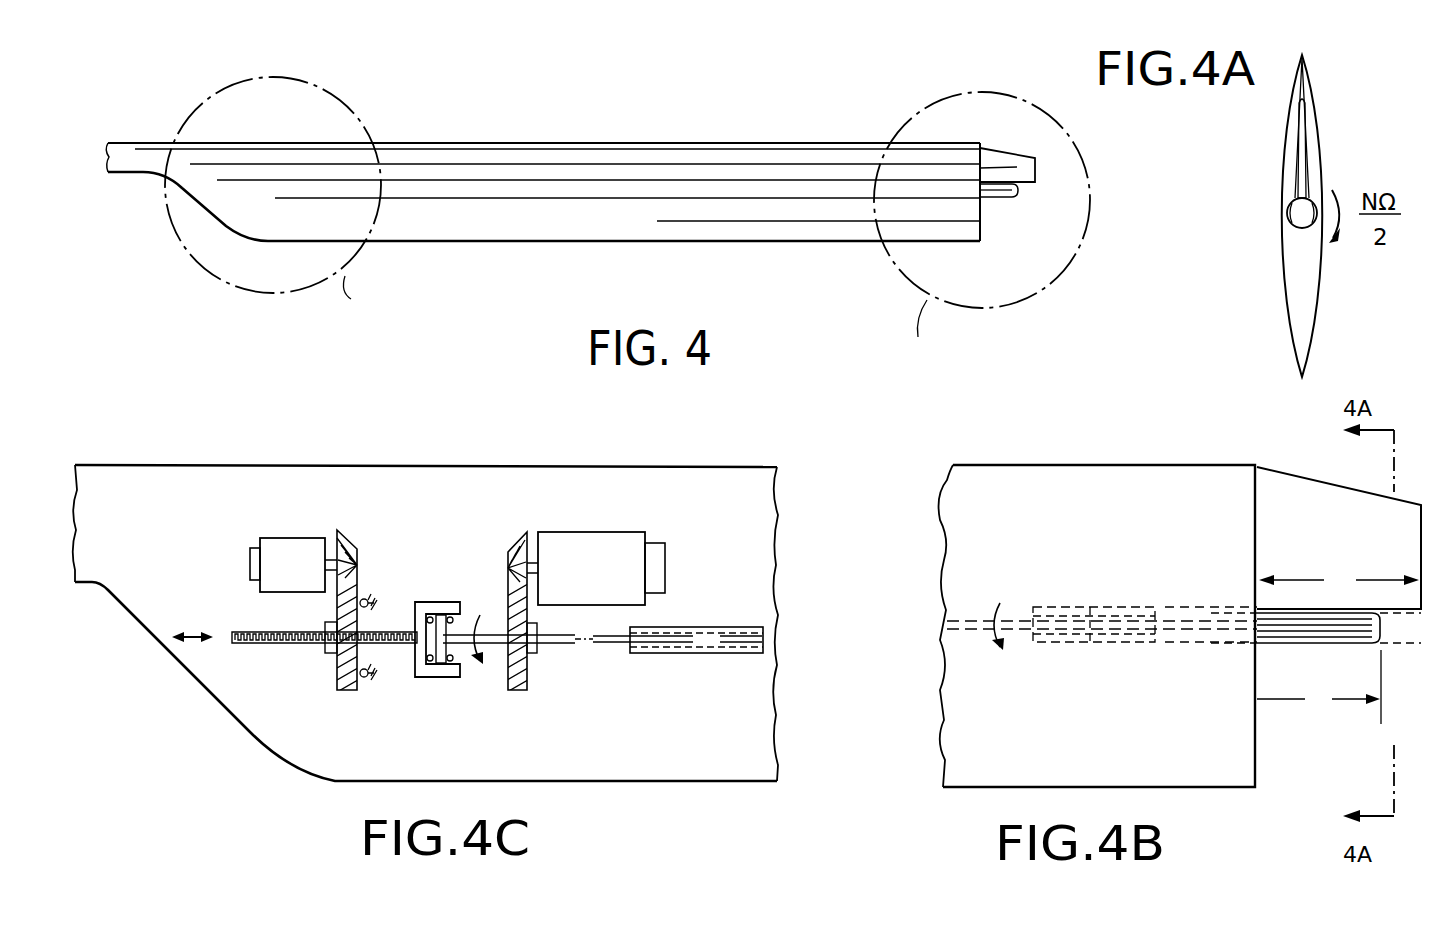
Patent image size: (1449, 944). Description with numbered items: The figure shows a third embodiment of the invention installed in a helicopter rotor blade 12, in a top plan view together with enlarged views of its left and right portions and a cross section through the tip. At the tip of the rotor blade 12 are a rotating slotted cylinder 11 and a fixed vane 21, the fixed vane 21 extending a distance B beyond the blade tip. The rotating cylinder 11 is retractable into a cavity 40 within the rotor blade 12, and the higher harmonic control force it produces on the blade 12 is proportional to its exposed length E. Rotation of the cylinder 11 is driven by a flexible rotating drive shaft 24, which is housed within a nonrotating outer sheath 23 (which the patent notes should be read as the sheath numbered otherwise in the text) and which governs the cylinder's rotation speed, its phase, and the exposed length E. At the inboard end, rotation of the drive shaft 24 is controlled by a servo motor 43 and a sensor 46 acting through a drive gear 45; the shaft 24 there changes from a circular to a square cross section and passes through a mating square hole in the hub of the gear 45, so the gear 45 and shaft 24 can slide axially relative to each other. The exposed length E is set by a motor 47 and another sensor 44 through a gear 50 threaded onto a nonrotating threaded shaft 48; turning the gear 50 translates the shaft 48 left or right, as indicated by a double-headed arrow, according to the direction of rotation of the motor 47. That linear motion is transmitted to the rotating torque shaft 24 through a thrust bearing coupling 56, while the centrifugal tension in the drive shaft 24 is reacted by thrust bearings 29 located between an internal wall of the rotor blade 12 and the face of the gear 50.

In FIG. 4, the helicopter rotor blade 12 is at (652, 147).
In FIG. 4B, the helicopter rotor blade 12 is at (1058, 467).
In FIG. 4, the fixed vane 21 is at (995, 162).
In FIG. 4B, the fixed vane 21 is at (1283, 486).
In FIG. 4, the rotating slotted cylinder 11 is at (1013, 198).
In FIG. 4B, the rotating slotted cylinder 11 is at (1298, 630).
In FIG. 4B, the flexible rotating drive shaft 24 is at (1068, 631).
In FIG. 4C, the flexible rotating drive shaft 24 is at (612, 650).
In FIG. 4B, the cavity 40 is at (1098, 643).
In FIG. 4C, the nonrotating outer sheath 23 is at (672, 628).
In FIG. 4C, the thrust bearings 29 is at (378, 600).
In FIG. 4C, the servo motor 43 is at (591, 538).
In FIG. 4C, the sensor 44 is at (250, 556).
In FIG. 4C, the drive gear 45 is at (532, 672).
In FIG. 4C, the sensor 46 is at (668, 548).
In FIG. 4C, the motor 47 is at (300, 538).
In FIG. 4C, the nonrotating threaded shaft 48 is at (270, 646).
In FIG. 4C, the gear 50 is at (343, 690).
In FIG. 4C, the thrust bearing coupling 56 is at (437, 680).